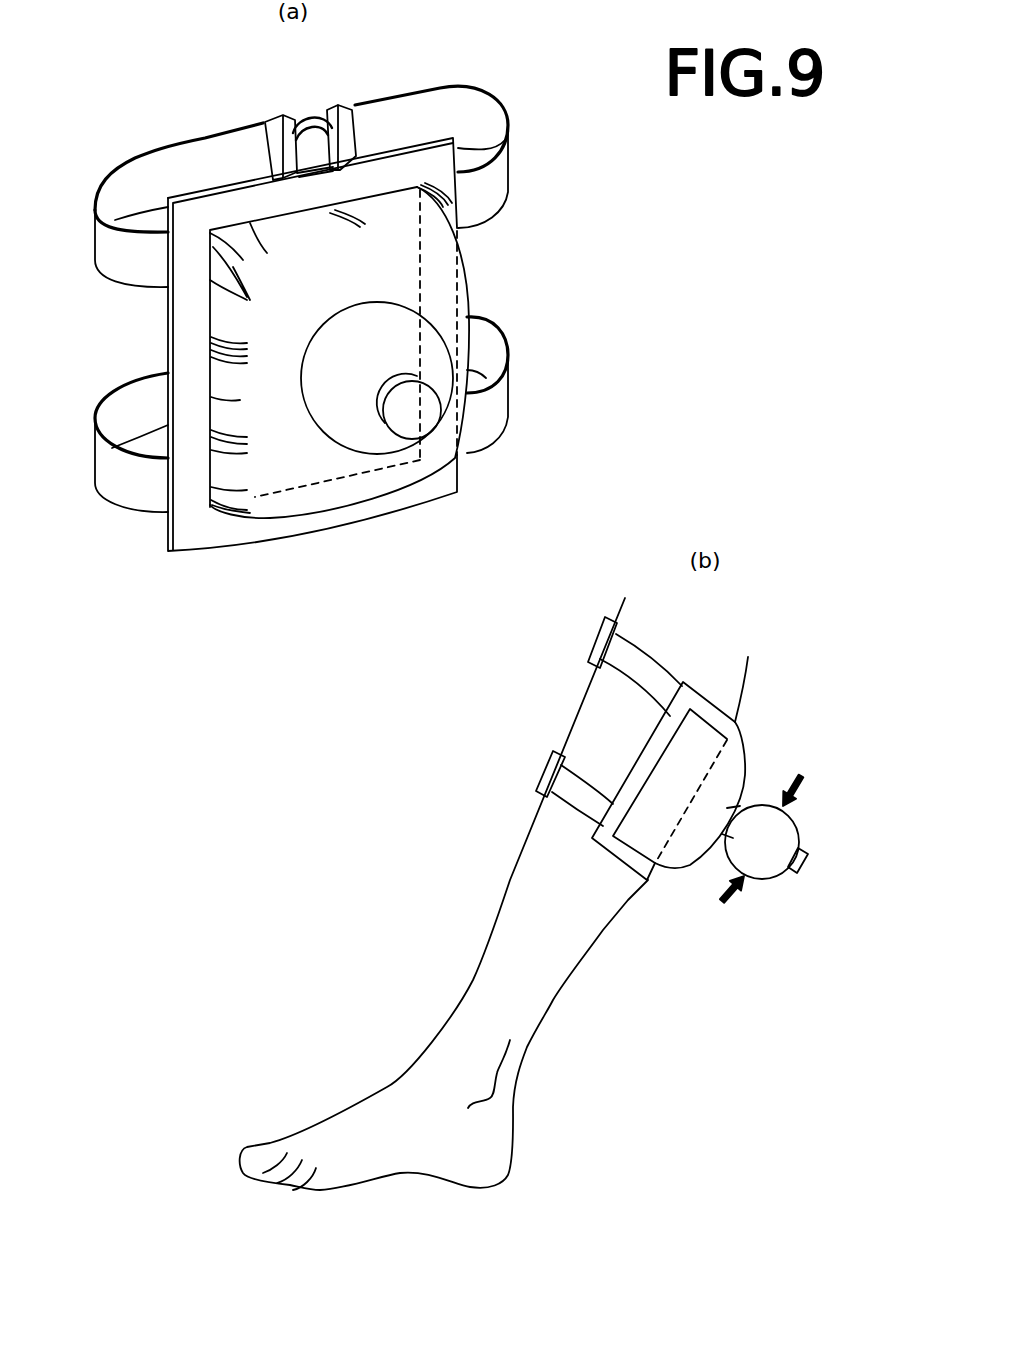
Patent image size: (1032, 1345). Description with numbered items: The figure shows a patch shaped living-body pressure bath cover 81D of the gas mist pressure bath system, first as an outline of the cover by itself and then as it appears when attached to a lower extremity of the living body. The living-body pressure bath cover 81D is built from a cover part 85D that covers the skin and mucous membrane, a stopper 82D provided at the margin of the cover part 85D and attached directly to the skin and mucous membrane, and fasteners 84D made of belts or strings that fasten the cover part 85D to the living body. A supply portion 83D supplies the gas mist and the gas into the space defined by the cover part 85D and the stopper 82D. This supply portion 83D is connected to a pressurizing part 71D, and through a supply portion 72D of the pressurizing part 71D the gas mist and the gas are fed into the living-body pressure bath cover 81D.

The living-body pressure bath cover 81D is at (513, 84).
The stopper 82D is at (183, 338).
The supply portion 83D is at (718, 842).
The fasteners 84D is at (146, 148).
The cover part 85D is at (470, 285).
The pressurizing part 71D is at (380, 447).
The supply portion of the pressurizing part 72D is at (416, 424).